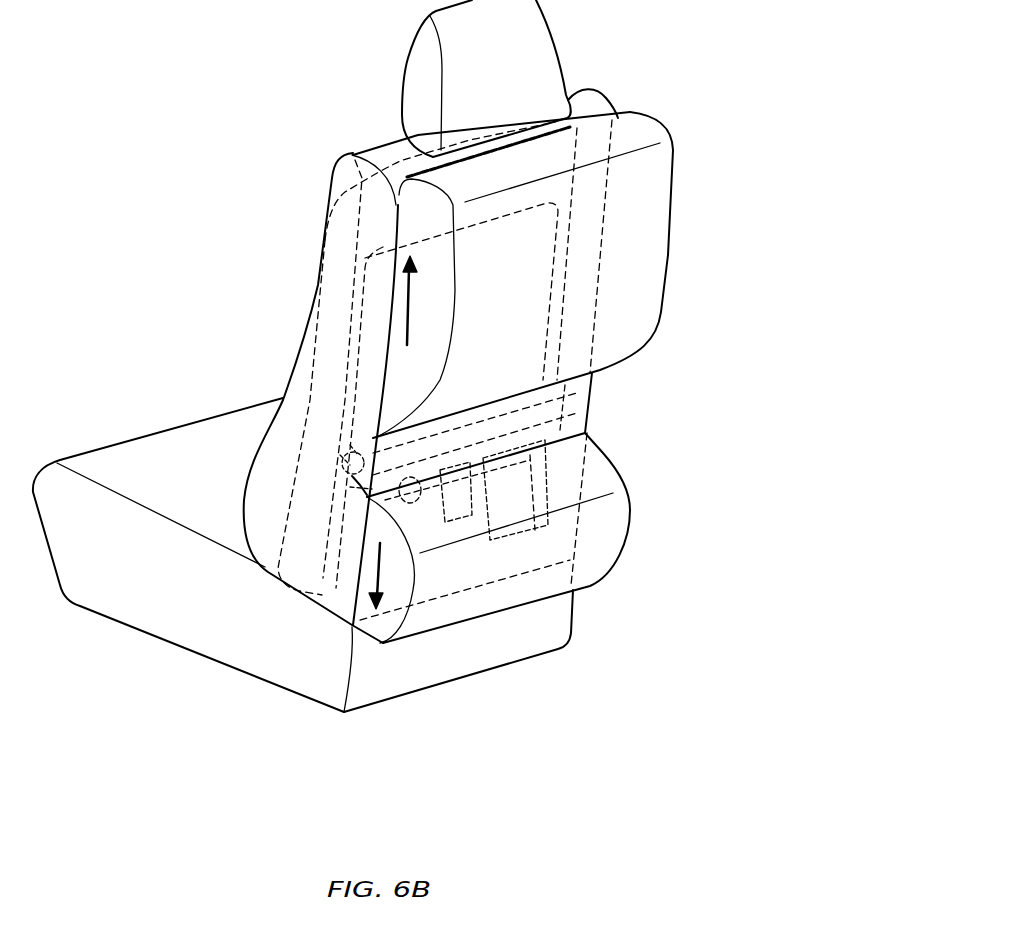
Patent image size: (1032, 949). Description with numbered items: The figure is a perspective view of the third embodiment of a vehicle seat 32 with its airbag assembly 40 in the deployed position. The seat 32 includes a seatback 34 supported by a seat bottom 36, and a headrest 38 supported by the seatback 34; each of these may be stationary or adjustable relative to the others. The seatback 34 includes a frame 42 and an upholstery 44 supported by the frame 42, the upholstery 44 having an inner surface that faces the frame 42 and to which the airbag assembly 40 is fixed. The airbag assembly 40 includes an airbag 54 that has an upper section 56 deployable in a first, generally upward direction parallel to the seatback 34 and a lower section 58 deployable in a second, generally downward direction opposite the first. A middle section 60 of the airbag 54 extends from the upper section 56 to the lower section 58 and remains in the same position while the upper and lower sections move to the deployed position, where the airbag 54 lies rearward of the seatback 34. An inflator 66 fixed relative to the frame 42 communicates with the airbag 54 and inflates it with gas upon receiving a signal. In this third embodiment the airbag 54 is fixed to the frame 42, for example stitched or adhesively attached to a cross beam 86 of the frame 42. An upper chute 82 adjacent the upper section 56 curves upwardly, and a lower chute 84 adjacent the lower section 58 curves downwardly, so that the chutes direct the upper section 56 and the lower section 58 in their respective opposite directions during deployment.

The seat 32 is at (176, 121).
The seatback 34 is at (328, 226).
The seat bottom 36 is at (145, 432).
The headrest 38 is at (405, 78).
The airbag assembly 40 is at (647, 399).
The frame 42 is at (353, 153).
The upholstery 44 is at (598, 96).
The airbag 54 is at (670, 212).
The upper section 56 is at (664, 278).
The lower section 58 is at (630, 511).
The middle section 60 is at (341, 456).
The inflator 66 is at (452, 540).
The upper chute 82 is at (354, 450).
The lower chute 84 is at (350, 487).
The cross beam 86 is at (346, 459).